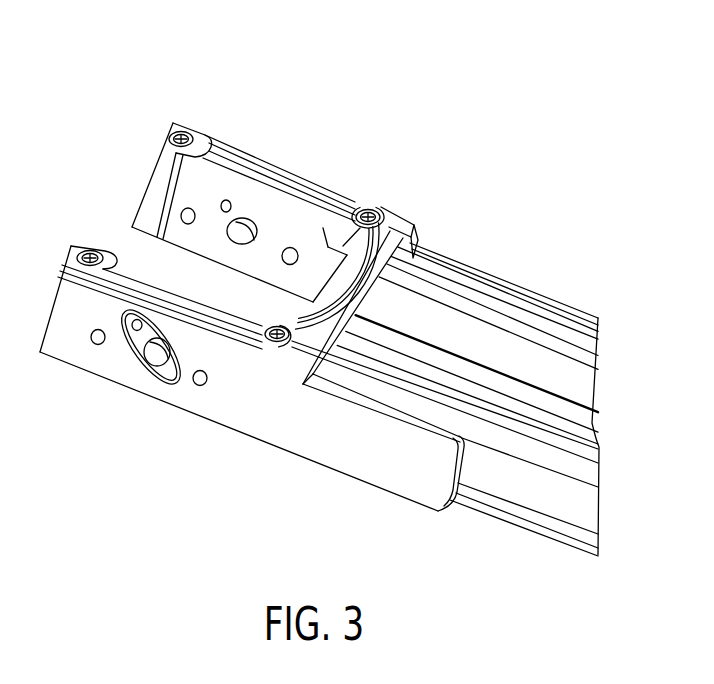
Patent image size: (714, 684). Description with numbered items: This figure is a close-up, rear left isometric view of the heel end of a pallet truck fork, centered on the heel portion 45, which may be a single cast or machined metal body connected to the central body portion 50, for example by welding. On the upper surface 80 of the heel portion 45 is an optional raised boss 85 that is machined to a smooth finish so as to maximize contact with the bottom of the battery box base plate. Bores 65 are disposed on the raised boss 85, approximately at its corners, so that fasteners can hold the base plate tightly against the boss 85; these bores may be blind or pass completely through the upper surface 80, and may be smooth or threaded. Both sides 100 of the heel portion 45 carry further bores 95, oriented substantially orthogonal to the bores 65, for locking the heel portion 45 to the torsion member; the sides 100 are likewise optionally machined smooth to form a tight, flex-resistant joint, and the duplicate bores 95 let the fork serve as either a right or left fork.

The heel portion 45 is at (340, 101).
The central body portion 50 is at (527, 302).
The bores 65 is at (180, 136).
The upper surface 80 is at (393, 230).
The raised boss 85 is at (218, 314).
The bores 95 is at (290, 247).
The sides 100 is at (162, 228).